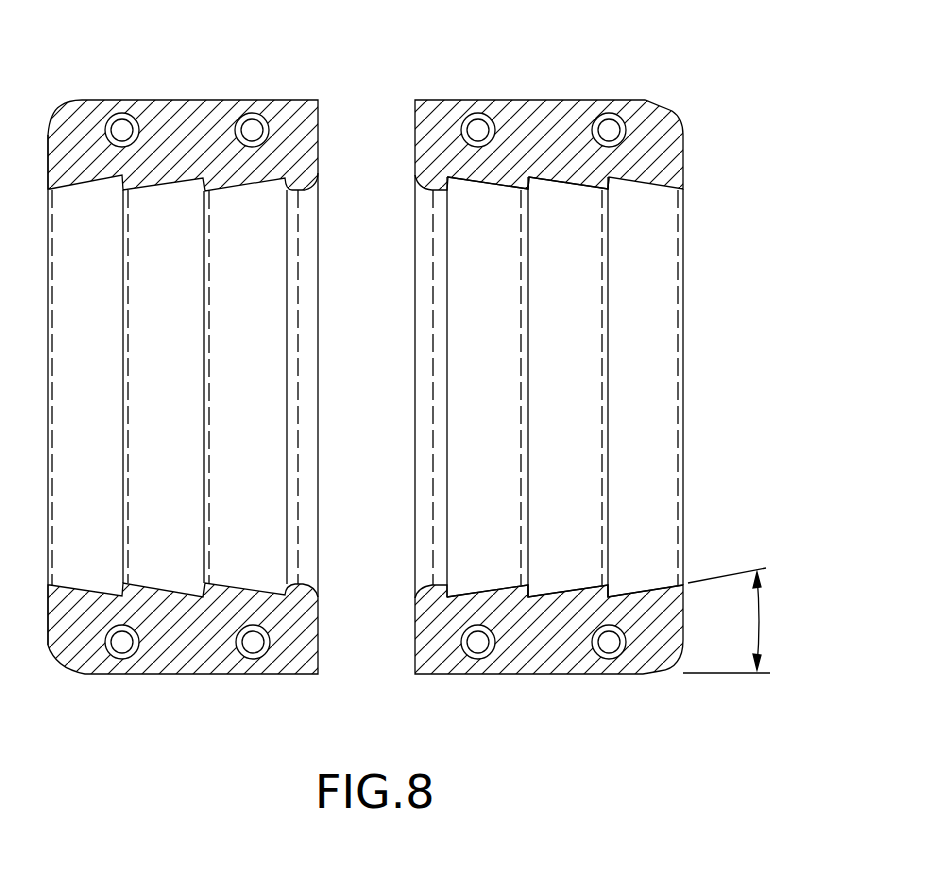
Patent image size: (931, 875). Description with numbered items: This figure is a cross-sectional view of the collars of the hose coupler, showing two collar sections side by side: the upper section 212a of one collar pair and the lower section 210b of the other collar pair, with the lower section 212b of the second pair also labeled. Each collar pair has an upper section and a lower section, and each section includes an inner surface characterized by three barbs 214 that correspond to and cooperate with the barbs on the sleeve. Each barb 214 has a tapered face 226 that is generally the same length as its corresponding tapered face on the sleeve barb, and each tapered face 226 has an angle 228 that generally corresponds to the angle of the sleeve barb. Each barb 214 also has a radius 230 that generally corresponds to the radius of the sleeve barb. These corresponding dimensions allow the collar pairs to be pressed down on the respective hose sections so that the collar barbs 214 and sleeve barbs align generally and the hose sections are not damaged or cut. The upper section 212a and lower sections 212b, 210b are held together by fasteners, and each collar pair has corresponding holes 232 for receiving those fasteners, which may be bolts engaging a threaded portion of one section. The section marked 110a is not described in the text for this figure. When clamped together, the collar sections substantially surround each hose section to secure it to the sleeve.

The holes 232 is at (122, 113).
The upper section 212a is at (218, 101).
The lower section 212b is at (193, 675).
The tapered face 226 is at (563, 187).
The first die 110a is at (623, 387).
The barbs 214 is at (507, 191).
The radius 230 is at (530, 585).
The angle 228 is at (762, 620).
The lower section 210b is at (548, 675).